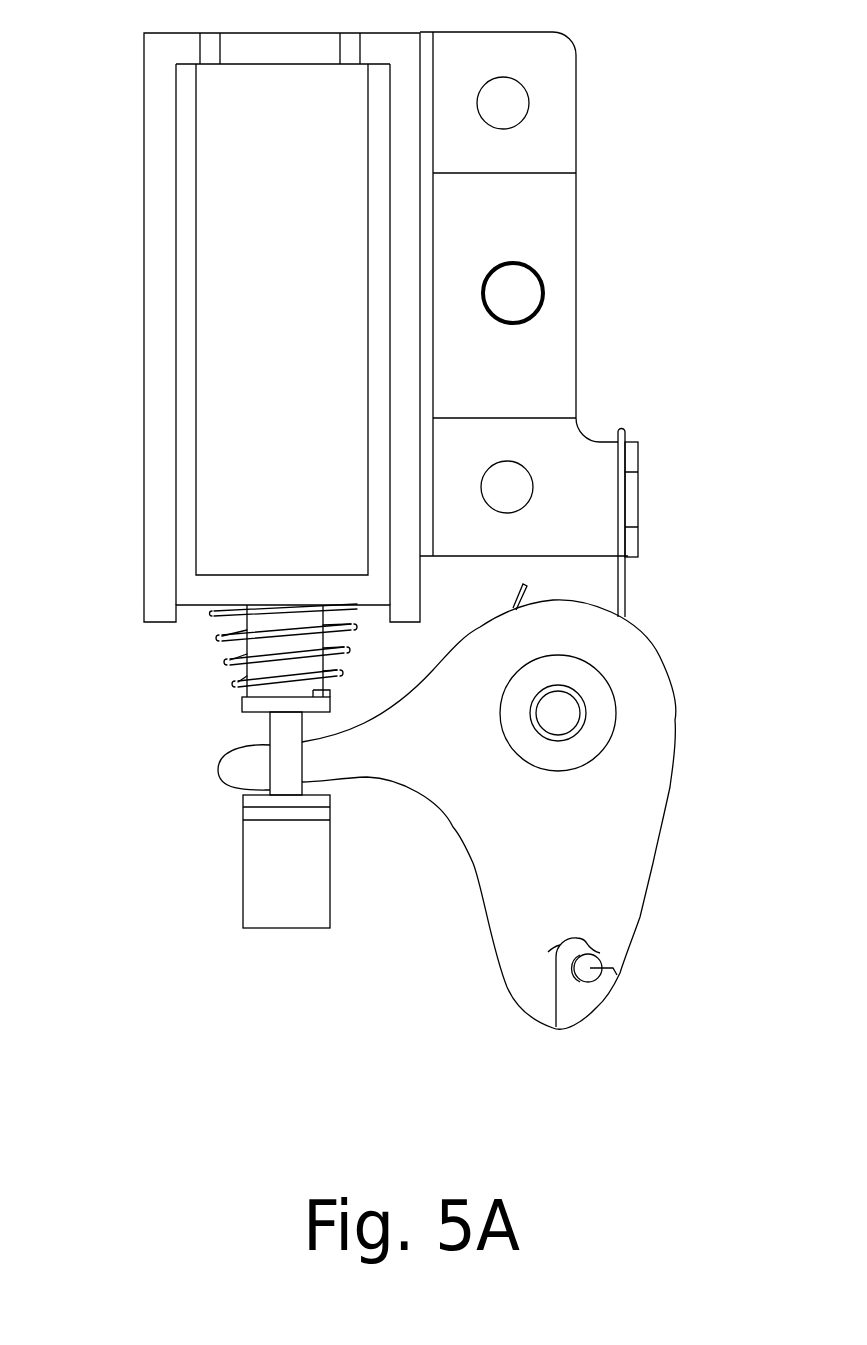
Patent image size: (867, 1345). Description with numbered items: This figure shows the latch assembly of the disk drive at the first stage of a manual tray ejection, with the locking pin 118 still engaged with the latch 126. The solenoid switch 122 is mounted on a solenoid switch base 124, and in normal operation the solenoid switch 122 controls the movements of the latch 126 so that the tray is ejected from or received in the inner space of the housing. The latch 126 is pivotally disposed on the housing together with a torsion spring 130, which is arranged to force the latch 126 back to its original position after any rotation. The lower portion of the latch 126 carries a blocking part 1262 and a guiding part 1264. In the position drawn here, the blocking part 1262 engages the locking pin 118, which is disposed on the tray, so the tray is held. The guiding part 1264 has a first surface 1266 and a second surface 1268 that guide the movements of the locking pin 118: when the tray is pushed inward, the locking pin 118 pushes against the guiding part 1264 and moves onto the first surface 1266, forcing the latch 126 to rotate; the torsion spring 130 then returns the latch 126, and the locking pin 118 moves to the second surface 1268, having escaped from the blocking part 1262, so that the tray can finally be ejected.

The solenoid switch 122 is at (230, 97).
The solenoid switch base 124 is at (562, 250).
The latch 126 is at (498, 840).
The torsion spring 130 is at (623, 593).
The locking pin 118 is at (617, 975).
The blocking part 1262 is at (578, 1008).
The guiding part 1264 is at (597, 940).
The first surface 1266 is at (583, 940).
The second surface 1268 is at (558, 945).